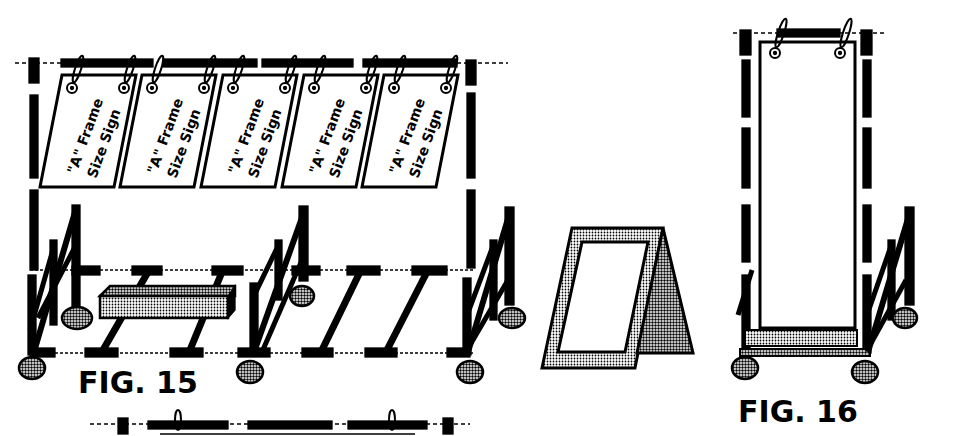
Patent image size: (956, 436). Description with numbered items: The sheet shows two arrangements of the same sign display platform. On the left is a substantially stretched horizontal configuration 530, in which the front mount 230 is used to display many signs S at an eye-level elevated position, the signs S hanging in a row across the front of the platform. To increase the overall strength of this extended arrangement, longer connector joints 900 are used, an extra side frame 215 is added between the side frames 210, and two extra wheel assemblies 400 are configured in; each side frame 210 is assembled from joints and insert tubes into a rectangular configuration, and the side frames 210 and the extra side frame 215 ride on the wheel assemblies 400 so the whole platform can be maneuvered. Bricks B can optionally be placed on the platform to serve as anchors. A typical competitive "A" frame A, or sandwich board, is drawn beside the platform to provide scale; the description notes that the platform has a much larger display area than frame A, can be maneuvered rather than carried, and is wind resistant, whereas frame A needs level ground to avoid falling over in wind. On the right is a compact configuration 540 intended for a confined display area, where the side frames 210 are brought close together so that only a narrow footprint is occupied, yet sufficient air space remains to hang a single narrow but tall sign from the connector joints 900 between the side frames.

In FIG. 15, the connector joint 900 is at (104, 60).
In FIG. 15, the stretched horizontal configuration 530 is at (500, 82).
In FIG. 16, the compact configuration 540 is at (725, 118).
In FIG. 15, the sign S is at (217, 190).
In FIG. 15, the "A" frame A is at (648, 222).
In FIG. 15, the bricks B is at (214, 290).
In FIG. 15, the side frame 210 is at (80, 245).
In FIG. 15, the extra side frame 215 is at (308, 248).
In FIG. 15, the front mount 230 is at (462, 278).
In FIG. 15, the wheel assembly 400 is at (265, 372).